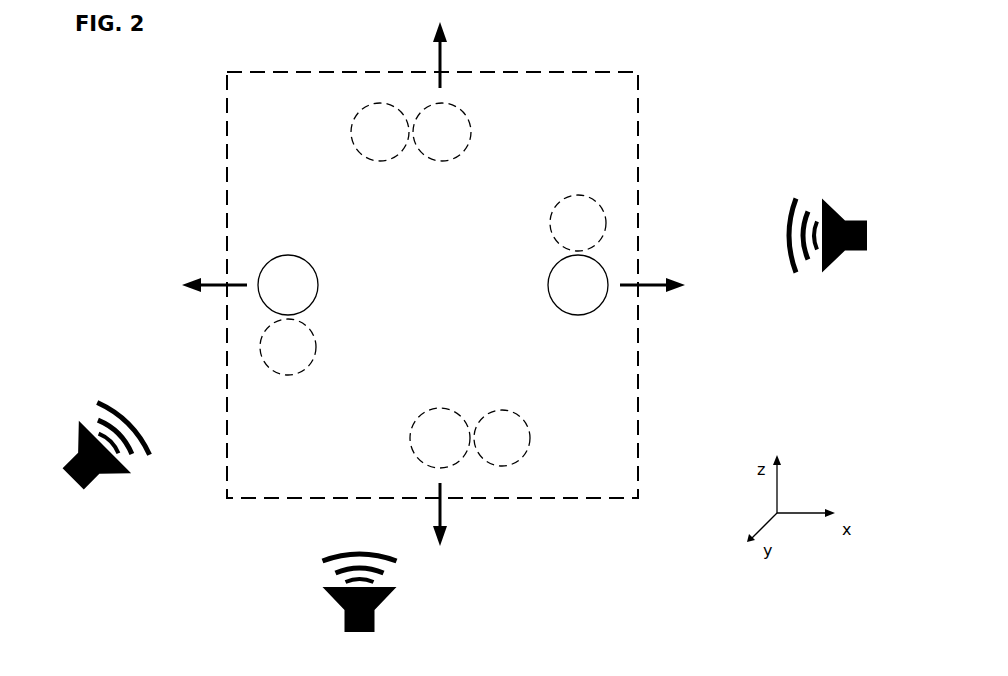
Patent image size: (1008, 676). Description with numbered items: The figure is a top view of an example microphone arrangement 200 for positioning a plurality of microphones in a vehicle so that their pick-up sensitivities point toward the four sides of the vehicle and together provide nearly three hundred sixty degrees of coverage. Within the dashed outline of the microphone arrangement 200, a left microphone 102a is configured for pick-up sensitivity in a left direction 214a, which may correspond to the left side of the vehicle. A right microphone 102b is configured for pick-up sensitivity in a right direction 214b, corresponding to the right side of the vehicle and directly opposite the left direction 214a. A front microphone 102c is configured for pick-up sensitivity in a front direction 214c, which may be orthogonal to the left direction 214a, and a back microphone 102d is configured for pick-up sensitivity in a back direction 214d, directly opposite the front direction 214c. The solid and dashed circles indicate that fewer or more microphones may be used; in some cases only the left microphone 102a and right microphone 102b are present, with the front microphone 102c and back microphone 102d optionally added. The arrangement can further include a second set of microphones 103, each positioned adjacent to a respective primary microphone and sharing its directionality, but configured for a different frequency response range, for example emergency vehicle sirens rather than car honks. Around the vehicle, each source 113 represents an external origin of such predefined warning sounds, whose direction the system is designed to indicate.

The microphone arrangement 200 is at (592, 72).
The left microphone 102a is at (318, 281).
The right microphone 102b is at (549, 287).
The front microphone 102c is at (442, 161).
The back microphone 102d is at (432, 408).
The second set of microphones 103 is at (353, 117).
The source 113 is at (803, 283).
The left direction 214a is at (213, 287).
The right direction 214b is at (655, 288).
The front direction 214c is at (444, 53).
The back direction 214d is at (445, 508).